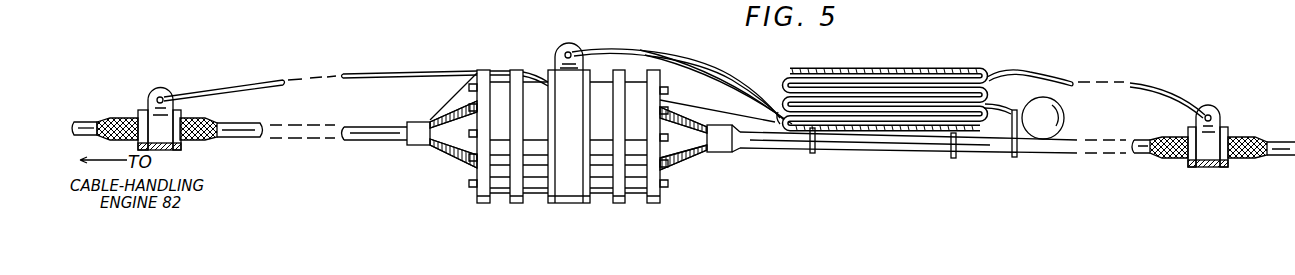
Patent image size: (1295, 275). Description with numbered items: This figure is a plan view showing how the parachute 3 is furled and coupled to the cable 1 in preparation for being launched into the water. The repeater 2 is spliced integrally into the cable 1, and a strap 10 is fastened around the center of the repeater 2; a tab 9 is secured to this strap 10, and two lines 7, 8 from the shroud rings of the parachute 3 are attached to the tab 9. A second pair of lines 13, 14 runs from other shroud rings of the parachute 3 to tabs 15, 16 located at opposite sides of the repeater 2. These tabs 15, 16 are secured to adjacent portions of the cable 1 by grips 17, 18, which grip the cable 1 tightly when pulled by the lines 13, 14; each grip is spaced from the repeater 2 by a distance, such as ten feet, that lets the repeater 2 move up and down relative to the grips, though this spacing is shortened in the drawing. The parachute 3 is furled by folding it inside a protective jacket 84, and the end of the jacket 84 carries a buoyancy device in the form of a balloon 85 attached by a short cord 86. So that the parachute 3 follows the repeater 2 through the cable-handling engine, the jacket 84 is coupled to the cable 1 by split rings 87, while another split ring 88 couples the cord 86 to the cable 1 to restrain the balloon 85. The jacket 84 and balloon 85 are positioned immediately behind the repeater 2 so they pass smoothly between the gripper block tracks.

The cable 1 is at (378, 141).
The repeater 2 is at (535, 185).
The parachute 3 is at (778, 80).
The line 7 is at (714, 76).
The line 8 is at (641, 53).
The tab 9 is at (561, 50).
The strap 10 is at (565, 204).
The line 13 is at (1030, 76).
The line 14 is at (408, 79).
The tab 15 is at (1218, 109).
The tab 16 is at (166, 92).
The grip 17 is at (1246, 157).
The grip 18 is at (203, 142).
The protective jacket 84 is at (888, 67).
The balloon 85 is at (1065, 110).
The cord 86 is at (1000, 106).
The split rings 87 is at (815, 151).
The split ring 88 is at (1017, 156).